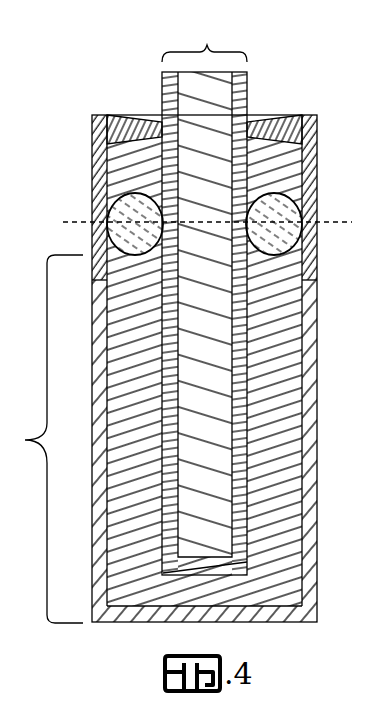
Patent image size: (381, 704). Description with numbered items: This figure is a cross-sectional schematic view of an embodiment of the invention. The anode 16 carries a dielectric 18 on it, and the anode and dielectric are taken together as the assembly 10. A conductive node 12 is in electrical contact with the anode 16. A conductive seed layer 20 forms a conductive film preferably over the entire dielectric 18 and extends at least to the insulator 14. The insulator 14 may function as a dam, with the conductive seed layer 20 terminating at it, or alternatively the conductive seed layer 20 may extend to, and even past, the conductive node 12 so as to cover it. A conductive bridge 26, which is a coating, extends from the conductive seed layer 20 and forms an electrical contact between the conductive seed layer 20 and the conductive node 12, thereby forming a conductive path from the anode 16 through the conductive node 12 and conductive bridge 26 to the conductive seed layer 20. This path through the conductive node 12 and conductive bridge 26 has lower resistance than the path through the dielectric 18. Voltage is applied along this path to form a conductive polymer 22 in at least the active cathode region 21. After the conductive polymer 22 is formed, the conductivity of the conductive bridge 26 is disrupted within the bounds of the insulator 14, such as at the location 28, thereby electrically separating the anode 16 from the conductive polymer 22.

The anode with dielectric 10 is at (205, 45).
The conductive node 12 is at (130, 120).
The insulator 14 is at (283, 208).
The anode 16 is at (204, 93).
The dielectric 18 is at (177, 102).
The conductive seed layer 20 is at (272, 313).
The active cathode region 21 is at (48, 439).
The conductive polymer 22 is at (308, 363).
The conductive bridge 26 is at (91, 197).
The disruption location 28 is at (80, 220).